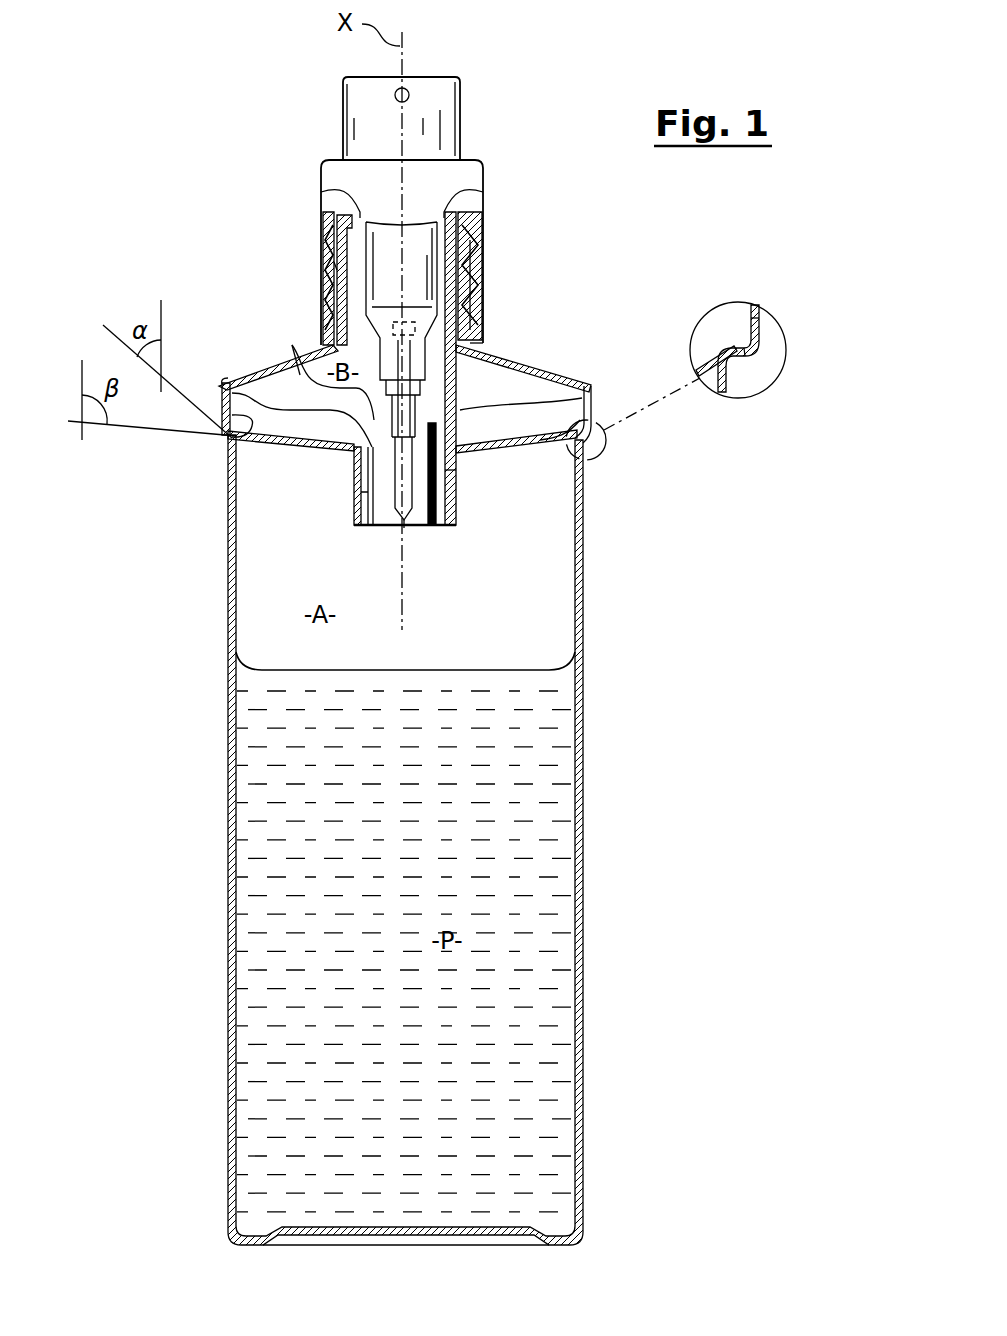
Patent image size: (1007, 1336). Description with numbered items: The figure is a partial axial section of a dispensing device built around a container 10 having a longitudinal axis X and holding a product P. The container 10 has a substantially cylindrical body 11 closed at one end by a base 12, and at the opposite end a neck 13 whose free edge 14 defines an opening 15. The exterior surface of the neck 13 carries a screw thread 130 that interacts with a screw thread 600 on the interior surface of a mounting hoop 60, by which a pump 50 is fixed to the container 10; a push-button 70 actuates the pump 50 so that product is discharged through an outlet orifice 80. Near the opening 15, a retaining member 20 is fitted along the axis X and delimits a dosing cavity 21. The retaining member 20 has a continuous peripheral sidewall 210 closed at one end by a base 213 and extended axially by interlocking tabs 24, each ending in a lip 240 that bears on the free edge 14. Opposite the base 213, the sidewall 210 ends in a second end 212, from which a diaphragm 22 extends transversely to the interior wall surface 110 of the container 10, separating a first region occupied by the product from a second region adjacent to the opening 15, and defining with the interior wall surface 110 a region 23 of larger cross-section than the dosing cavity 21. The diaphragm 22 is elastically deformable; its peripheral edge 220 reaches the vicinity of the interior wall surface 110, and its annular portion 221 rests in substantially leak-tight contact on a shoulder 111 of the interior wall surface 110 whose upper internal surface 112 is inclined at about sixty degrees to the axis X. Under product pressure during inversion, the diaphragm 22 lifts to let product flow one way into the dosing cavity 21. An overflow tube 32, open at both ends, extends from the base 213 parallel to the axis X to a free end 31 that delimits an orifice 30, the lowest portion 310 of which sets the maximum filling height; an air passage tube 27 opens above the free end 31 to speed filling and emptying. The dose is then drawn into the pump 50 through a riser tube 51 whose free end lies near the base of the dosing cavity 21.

The container 10 is at (409, 856).
The cylindrical body 11 is at (578, 728).
The base 12 is at (436, 1236).
The neck 13 is at (466, 322).
The free edge 14 is at (336, 229).
The opening 15 is at (322, 192).
The retaining member 20 is at (462, 412).
The dosing cavity 21 is at (422, 490).
The diaphragm 22 is at (588, 418).
The region 23 is at (508, 430).
The interlocking tabs 24 is at (468, 259).
The air passage tube 27 is at (456, 527).
The orifice 30 is at (268, 378).
The free end 31 is at (222, 384).
The tube 32 is at (358, 496).
The pump 50 is at (394, 296).
The riser tube 51 is at (400, 527).
The mounting hoop 60 is at (336, 256).
The push-button 70 is at (460, 108).
The outlet orifice 80 is at (395, 97).
The interior wall surface 110 is at (224, 438).
The shoulder 111 is at (762, 360).
The upper internal surface 112 is at (760, 318).
The screw thread 130 is at (480, 278).
The peripheral sidewall 210 is at (452, 497).
The second end 212 is at (346, 450).
The base 213 is at (418, 527).
The peripheral edge 220 is at (740, 347).
The annular portion 221 is at (717, 344).
The lip 240 is at (470, 205).
The lowest portion 310 is at (285, 346).
The screw thread 600 is at (336, 268).